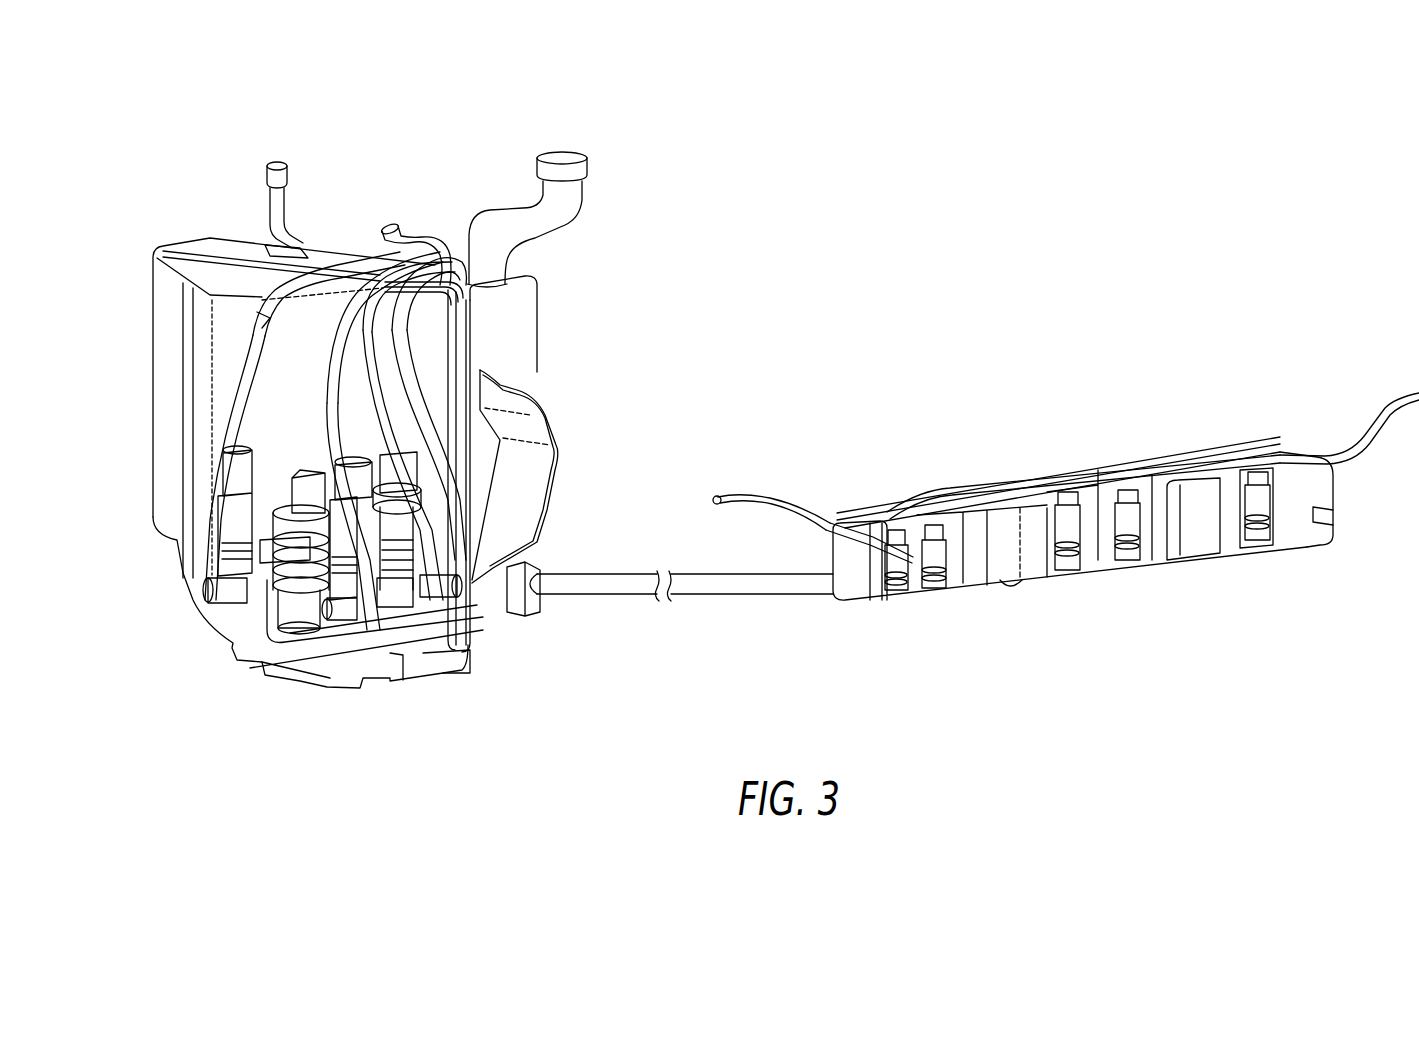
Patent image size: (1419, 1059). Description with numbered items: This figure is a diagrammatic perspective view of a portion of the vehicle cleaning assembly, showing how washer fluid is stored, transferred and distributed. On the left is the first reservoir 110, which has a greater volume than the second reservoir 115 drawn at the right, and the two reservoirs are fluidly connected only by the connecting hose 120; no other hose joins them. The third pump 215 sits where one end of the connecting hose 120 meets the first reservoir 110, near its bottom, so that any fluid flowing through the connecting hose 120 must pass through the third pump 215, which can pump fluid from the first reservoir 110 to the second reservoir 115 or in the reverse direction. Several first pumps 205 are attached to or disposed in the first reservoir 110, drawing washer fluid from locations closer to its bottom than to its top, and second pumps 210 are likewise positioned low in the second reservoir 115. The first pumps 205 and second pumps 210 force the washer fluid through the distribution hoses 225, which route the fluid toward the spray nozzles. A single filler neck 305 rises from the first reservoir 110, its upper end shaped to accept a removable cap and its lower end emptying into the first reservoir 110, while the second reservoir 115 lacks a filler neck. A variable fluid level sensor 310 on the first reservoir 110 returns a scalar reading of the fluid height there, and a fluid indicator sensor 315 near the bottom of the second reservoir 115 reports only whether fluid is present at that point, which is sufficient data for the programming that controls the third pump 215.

The first reservoir 110 is at (520, 328).
The second reservoir 115 is at (1190, 527).
The connecting hose 120 is at (730, 587).
The first pump 205 is at (237, 525).
The second pump 210 is at (928, 592).
The third pump 215 is at (540, 606).
The distribution hoses 225 is at (318, 290).
The filler neck 305 is at (575, 222).
The variable fluid level sensor 310 is at (183, 440).
The fluid indicator sensor 315 is at (1335, 532).